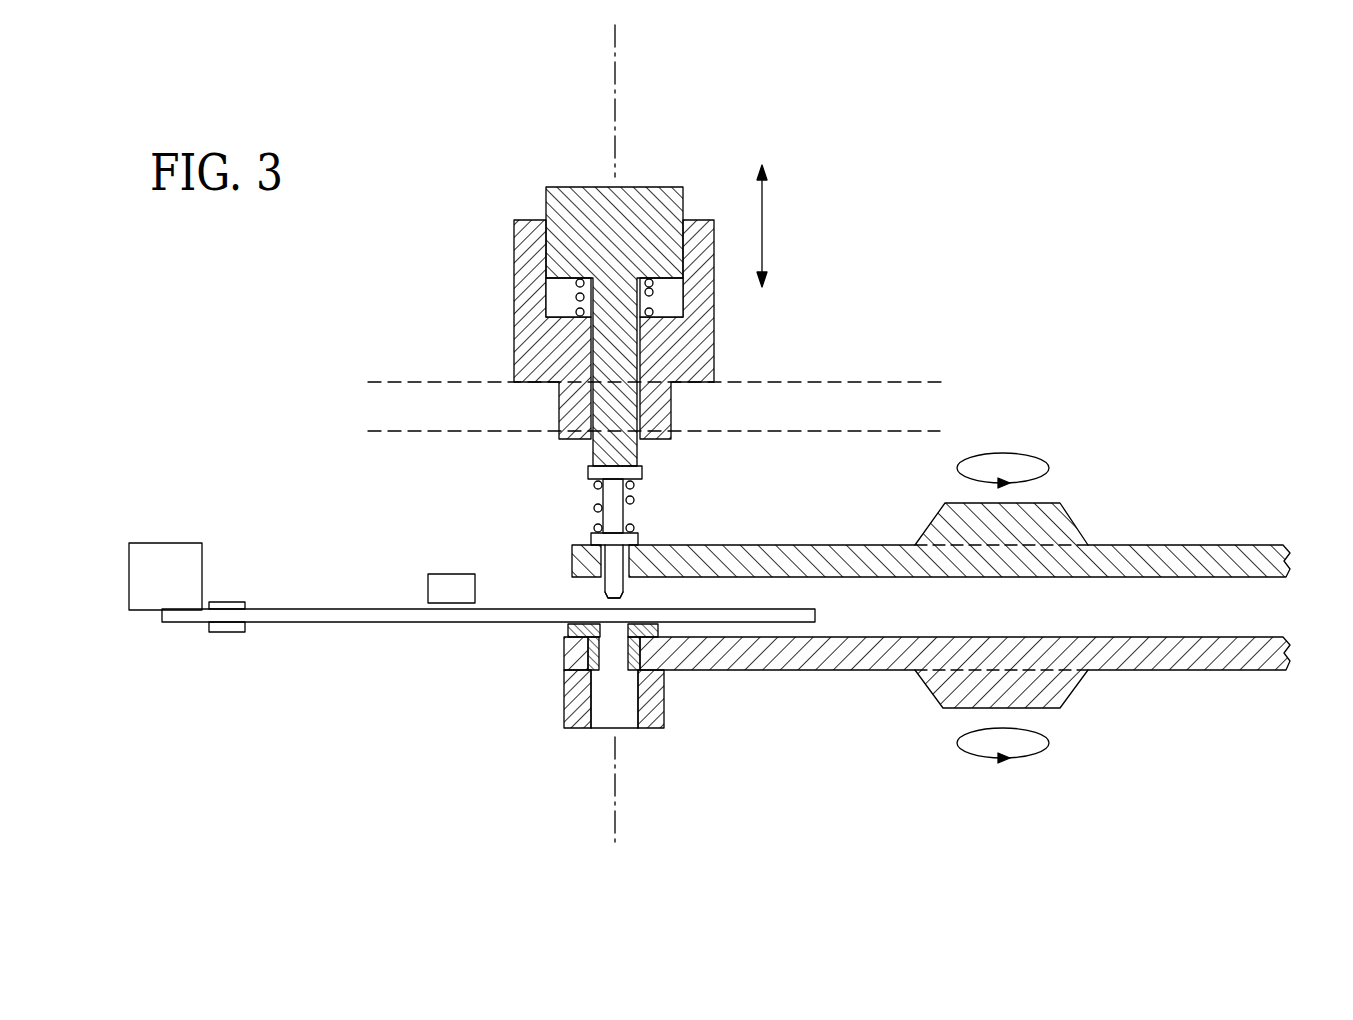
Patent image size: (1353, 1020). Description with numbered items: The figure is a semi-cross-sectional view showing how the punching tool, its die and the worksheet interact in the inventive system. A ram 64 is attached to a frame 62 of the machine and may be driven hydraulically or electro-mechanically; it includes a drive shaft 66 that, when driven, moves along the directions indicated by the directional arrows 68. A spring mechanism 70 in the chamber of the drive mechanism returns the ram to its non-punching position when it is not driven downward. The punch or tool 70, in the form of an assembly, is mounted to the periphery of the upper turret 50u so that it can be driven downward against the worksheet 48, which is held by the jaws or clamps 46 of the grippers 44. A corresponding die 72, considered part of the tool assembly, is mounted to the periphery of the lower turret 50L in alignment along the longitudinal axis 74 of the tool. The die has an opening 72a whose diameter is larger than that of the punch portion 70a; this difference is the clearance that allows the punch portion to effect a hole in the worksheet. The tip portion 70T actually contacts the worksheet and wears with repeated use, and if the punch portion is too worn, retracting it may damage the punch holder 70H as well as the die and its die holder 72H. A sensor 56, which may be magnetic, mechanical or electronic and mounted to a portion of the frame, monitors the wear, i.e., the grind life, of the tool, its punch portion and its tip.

The gripper 44 is at (172, 558).
The jaws 46 is at (182, 620).
The worksheet 48 is at (325, 618).
The sensor 56 is at (428, 583).
The frame 62 is at (895, 380).
The ram 64 is at (514, 243).
The drive shaft 66 is at (592, 453).
The directional arrows 68 is at (762, 212).
The punch or tool 70 is at (576, 297).
The punch holder 70H is at (590, 537).
The punch portion 70a is at (603, 587).
The tip portion 70T is at (625, 592).
The die 72 is at (553, 672).
The die holder 72H is at (568, 632).
The opening 72a is at (613, 628).
The longitudinal axis 74 is at (615, 42).
The upper turret 50u is at (842, 547).
The lower turret 50L is at (793, 660).